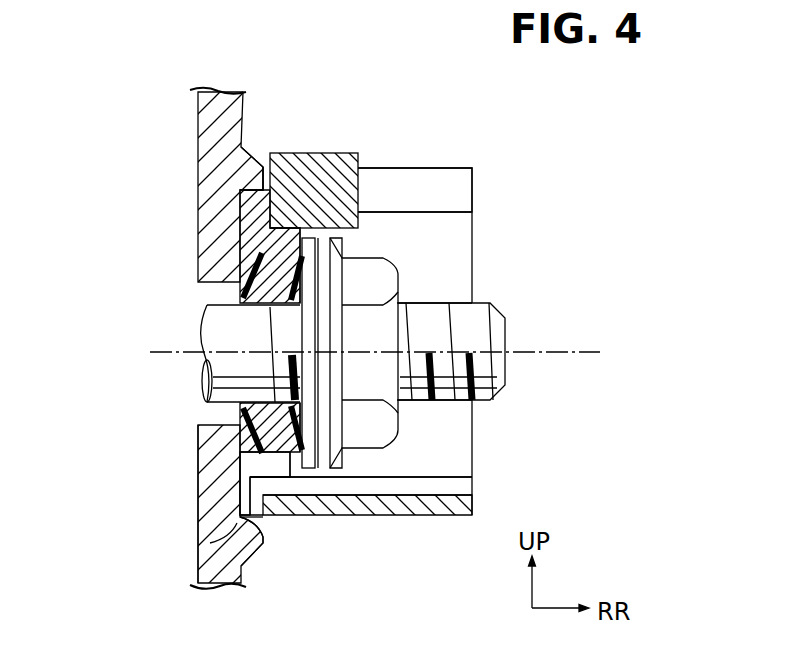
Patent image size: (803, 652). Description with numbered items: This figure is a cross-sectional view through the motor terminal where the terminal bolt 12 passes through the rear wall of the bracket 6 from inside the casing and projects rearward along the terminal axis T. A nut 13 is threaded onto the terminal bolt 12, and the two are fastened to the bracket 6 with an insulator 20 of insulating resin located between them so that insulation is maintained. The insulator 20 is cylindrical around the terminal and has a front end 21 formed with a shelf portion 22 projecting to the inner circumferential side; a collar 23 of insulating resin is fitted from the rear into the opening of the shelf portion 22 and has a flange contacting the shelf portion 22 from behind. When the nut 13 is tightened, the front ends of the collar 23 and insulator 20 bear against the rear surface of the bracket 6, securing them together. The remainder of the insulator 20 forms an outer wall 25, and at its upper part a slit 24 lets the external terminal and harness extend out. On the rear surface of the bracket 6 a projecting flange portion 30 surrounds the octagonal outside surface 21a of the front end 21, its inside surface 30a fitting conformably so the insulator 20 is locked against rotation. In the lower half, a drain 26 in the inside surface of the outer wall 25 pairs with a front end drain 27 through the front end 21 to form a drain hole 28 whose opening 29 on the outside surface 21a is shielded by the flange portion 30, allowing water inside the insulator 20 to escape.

The bracket 6 is at (247, 105).
The flange portion 30 is at (255, 149).
The inside surface of flange portion 30a is at (240, 207).
The front end 21 is at (237, 225).
The outside surface of front end 21a is at (253, 192).
The shelf portion 22 is at (247, 287).
The collar 23 is at (260, 235).
The outer wall 25 is at (327, 152).
The insulator 20 is at (351, 147).
The slit 24 is at (443, 187).
The nut 13 is at (400, 277).
The terminal bolt 12 is at (487, 303).
The front end drain 27 is at (247, 503).
The opening 29 is at (212, 550).
The drain hole 28 is at (431, 472).
The drain 26 is at (440, 485).
The axis of the terminal T is at (585, 350).